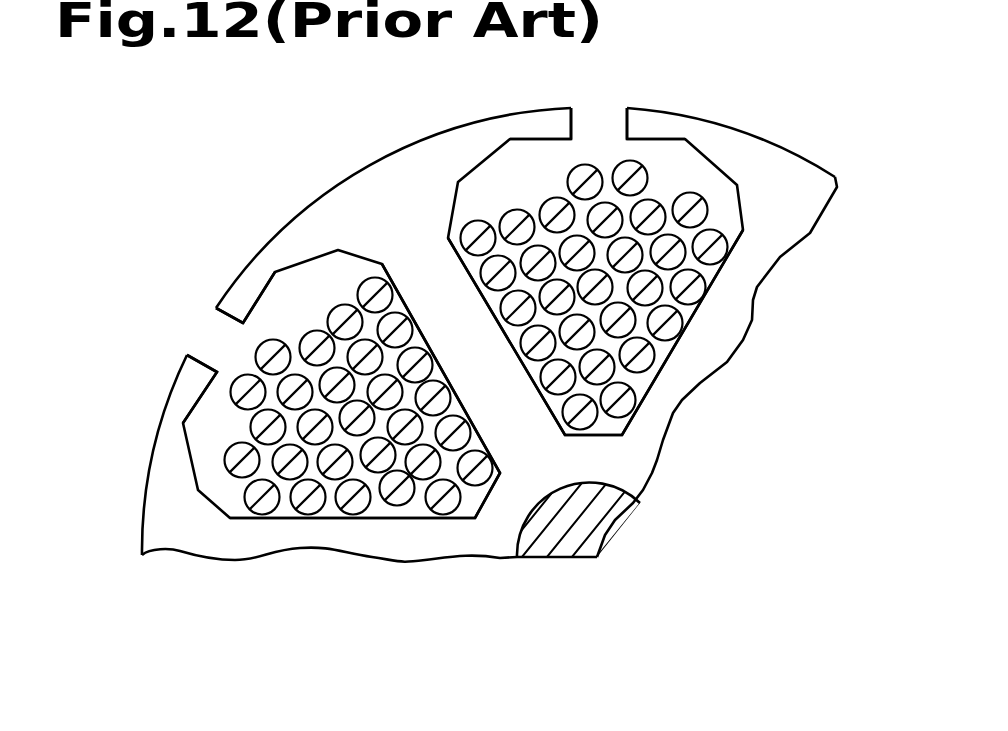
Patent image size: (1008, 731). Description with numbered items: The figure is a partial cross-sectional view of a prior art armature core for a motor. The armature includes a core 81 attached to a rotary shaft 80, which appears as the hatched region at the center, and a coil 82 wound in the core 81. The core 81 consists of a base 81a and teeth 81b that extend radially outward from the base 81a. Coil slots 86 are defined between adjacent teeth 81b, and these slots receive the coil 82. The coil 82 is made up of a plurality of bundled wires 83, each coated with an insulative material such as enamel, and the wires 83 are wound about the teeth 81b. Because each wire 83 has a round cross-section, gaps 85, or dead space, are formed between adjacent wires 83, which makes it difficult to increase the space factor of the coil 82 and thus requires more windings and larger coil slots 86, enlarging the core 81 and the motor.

The rotary shaft 80 is at (600, 517).
The core 81 is at (489, 369).
The base 81a is at (647, 470).
The teeth 81b is at (452, 243).
The coil 82 is at (740, 257).
The wires 83 is at (471, 428).
The gaps 85 is at (468, 514).
The coil slots 86 is at (737, 230).